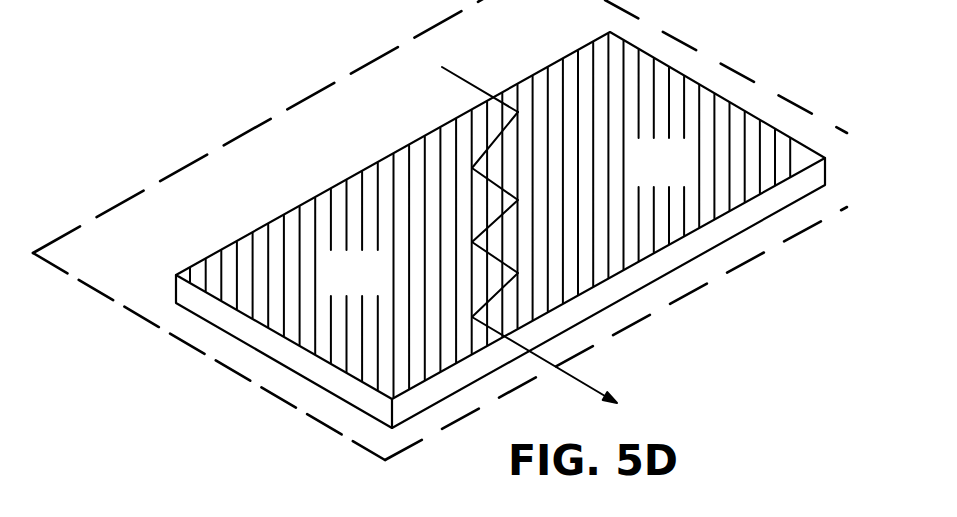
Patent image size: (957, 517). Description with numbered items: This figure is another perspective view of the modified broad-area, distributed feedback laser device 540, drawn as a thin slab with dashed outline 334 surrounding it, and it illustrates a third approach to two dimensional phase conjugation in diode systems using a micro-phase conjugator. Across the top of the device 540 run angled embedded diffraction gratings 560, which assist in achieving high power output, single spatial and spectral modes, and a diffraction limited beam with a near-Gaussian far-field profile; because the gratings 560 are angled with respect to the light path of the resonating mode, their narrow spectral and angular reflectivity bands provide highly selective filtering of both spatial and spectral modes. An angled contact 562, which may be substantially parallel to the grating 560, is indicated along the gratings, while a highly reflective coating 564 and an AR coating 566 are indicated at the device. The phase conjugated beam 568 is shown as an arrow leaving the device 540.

The substrate outline 334 is at (100, 274).
The modified broad-area distributed feedback laser device 540 is at (243, 236).
The angled embedded diffraction gratings 560 is at (365, 288).
The angled contact 562 is at (444, 151).
The highly reflective coating 564 is at (380, 132).
The AR coating 566 is at (326, 163).
The phase conjugated beam 568 is at (598, 368).